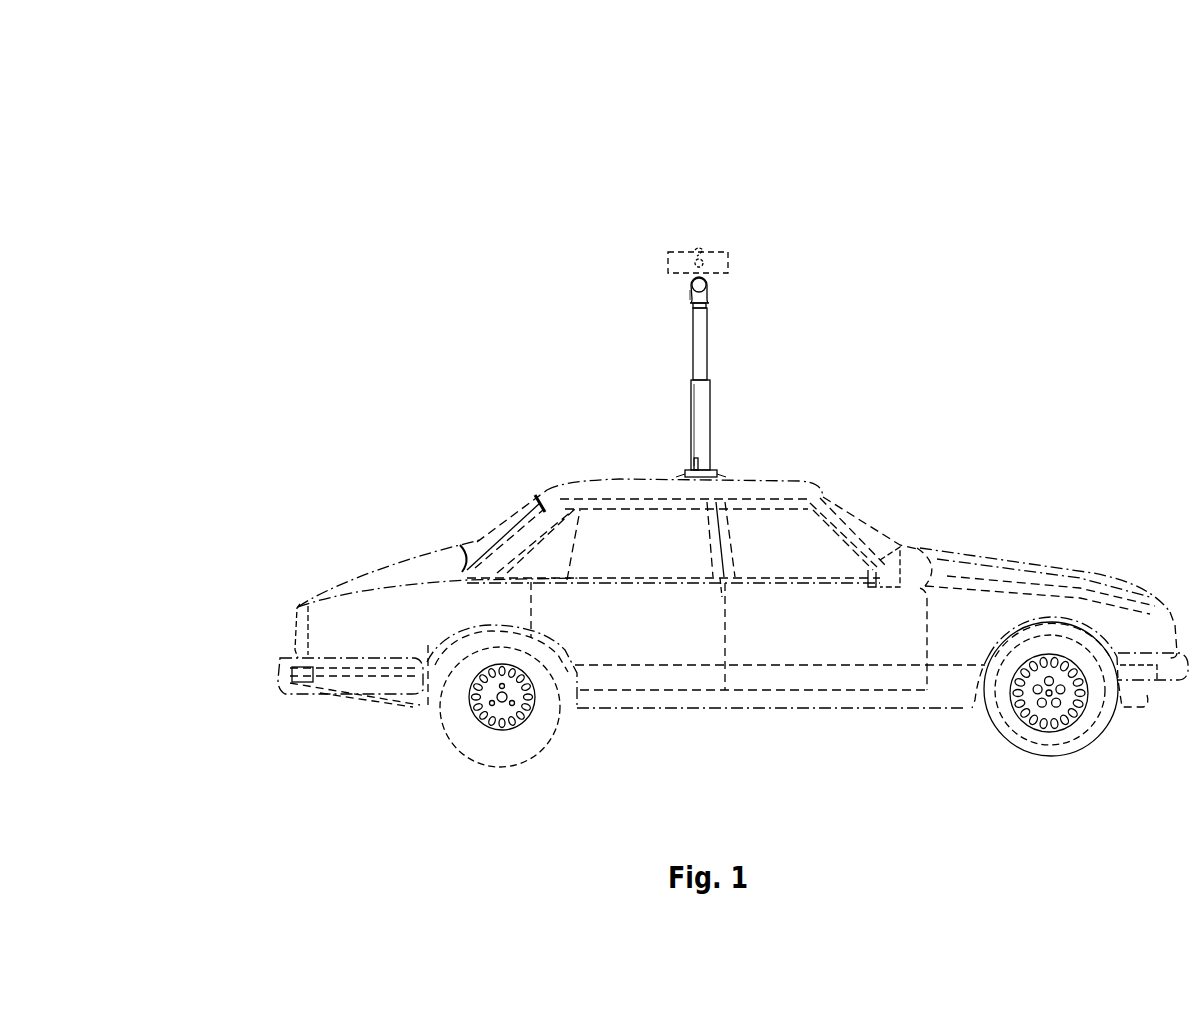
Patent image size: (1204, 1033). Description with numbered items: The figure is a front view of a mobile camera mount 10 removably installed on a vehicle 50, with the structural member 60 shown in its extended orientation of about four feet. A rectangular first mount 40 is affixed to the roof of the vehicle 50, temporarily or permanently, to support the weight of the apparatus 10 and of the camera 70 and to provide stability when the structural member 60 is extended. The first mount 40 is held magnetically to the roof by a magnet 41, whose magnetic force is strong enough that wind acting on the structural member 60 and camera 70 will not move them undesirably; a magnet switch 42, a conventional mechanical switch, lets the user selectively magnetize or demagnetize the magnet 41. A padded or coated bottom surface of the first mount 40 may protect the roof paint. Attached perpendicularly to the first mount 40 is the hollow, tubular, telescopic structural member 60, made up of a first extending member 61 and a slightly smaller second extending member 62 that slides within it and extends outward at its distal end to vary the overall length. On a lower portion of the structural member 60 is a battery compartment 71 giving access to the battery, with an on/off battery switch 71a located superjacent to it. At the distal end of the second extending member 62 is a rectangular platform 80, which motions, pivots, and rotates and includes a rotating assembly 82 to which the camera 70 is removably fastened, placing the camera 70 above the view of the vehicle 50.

The mobile camera mount 10 is at (212, 148).
The first mount 40 is at (693, 470).
The magnet 41 is at (683, 475).
The magnet switch 42 is at (722, 476).
The vehicle 50 is at (415, 617).
The structural member 60 is at (672, 402).
The first extending member 61 is at (704, 412).
The second extending member 62 is at (704, 360).
The camera 70 is at (678, 252).
The battery compartment 71 is at (703, 470).
The battery switch 71a is at (697, 462).
The platform 80 is at (708, 308).
The rotating assembly 82 is at (687, 297).